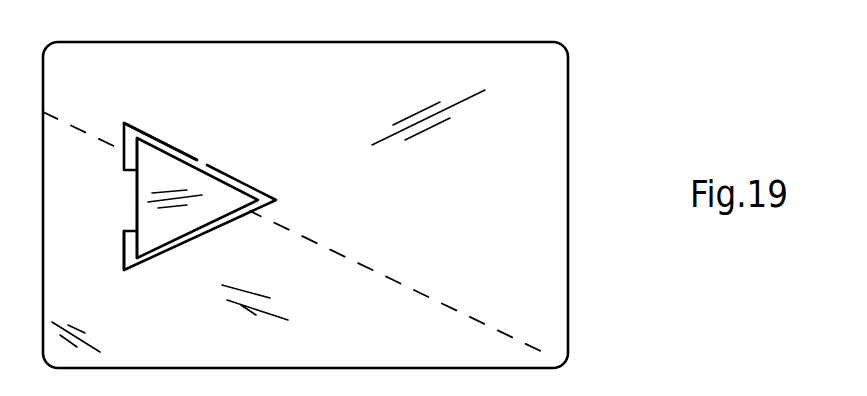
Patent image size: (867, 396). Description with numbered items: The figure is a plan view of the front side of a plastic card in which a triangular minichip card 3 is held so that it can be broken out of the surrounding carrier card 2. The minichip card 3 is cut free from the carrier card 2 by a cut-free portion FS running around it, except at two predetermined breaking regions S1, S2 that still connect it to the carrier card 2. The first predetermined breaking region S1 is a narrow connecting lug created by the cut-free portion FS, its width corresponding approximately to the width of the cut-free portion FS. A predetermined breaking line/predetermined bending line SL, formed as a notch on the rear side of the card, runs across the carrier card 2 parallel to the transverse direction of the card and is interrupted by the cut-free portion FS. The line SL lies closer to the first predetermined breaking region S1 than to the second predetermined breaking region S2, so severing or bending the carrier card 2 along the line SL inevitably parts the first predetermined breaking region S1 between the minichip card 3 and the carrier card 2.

The carrier card 2 is at (523, 163).
The minichip card 3 is at (165, 182).
The first predetermined breaking region S1 is at (205, 163).
The second predetermined breaking region S2 is at (137, 195).
The cut-free portion FS is at (129, 270).
The predetermined breaking line/predetermined bending line SL is at (416, 293).